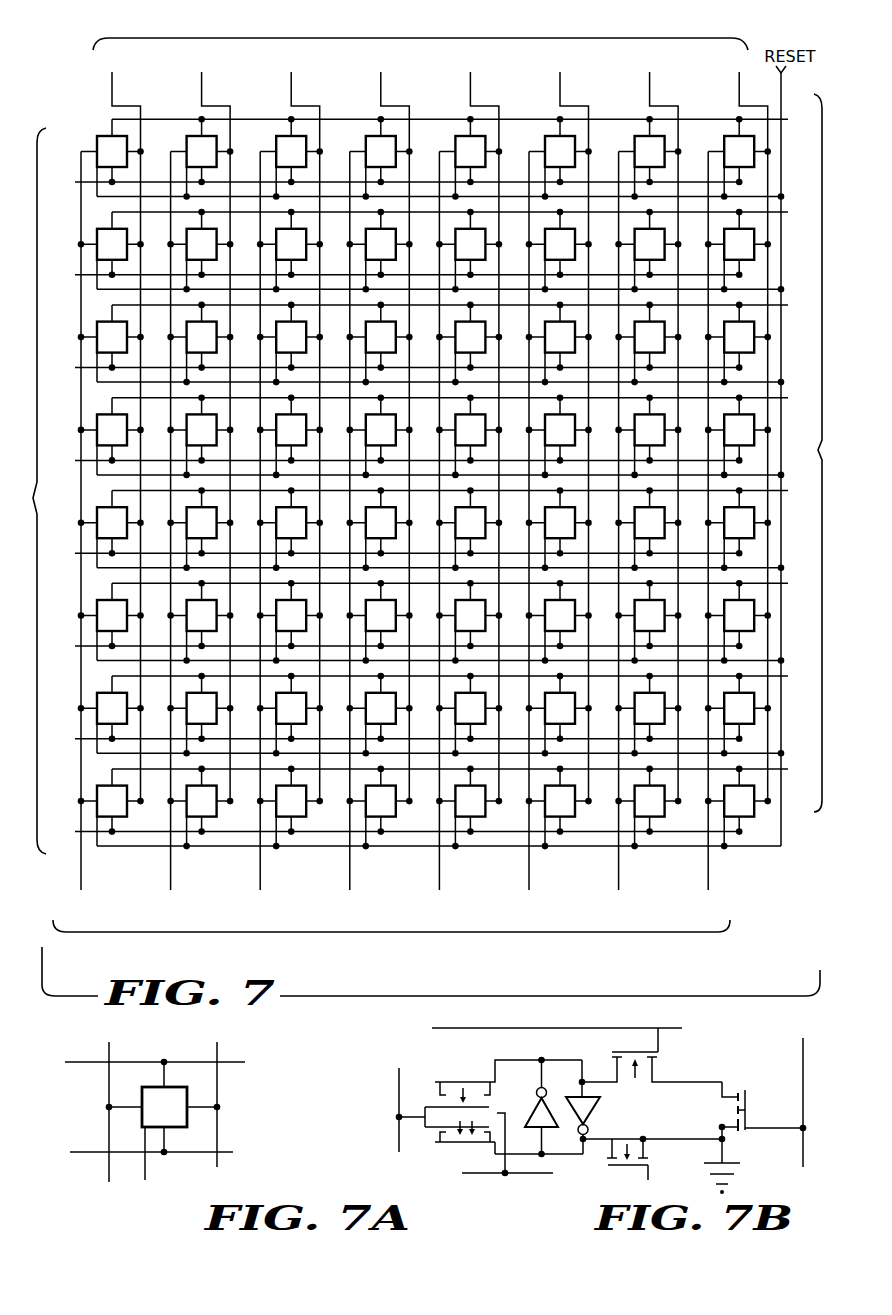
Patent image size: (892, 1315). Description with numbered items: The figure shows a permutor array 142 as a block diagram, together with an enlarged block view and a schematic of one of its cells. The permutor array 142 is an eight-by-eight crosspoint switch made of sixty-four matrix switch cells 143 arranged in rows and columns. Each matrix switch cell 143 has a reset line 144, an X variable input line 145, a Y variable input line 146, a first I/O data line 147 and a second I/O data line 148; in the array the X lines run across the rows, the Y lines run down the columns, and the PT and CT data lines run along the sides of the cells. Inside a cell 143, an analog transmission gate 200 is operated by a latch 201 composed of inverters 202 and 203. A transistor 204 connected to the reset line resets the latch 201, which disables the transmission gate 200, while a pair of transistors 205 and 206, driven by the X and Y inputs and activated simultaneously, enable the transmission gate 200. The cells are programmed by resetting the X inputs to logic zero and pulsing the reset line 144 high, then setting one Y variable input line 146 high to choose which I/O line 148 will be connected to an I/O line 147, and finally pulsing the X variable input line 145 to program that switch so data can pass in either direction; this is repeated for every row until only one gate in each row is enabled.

In FIG. 7, the permutor array 142 is at (112, 28).
In FIG. 7A, the matrix switch cell 143 is at (116, 1202).
In FIG. 7B, the matrix switch cell 143 is at (425, 1006).
In FIG. 7A, the reset line 144 is at (145, 1166).
In FIG. 7, the X variable input line 145 is at (818, 450).
In FIG. 7A, the X variable input line 145 is at (140, 1062).
In FIG. 7, the Y variable input line 146 is at (410, 38).
In FIG. 7A, the Y variable input line 146 is at (217, 1078).
In FIG. 7, the first I/O data line 147 is at (40, 498).
In FIG. 7A, the first I/O data line 147 is at (98, 1155).
In FIG. 7, the second I/O data line 148 is at (391, 557).
In FIG. 7A, the second I/O data line 148 is at (107, 1083).
In FIG. 7B, the analog transmission gate 200 is at (473, 1053).
In FIG. 7B, the latch 201 is at (578, 1166).
In FIG. 7B, the inverter 202 is at (552, 1110).
In FIG. 7B, the inverter 203 is at (591, 1130).
In FIG. 7B, the transistor 204 is at (652, 1172).
In FIG. 7B, the transistor 205 is at (660, 1046).
In FIG. 7B, the transistor 206 is at (728, 1090).